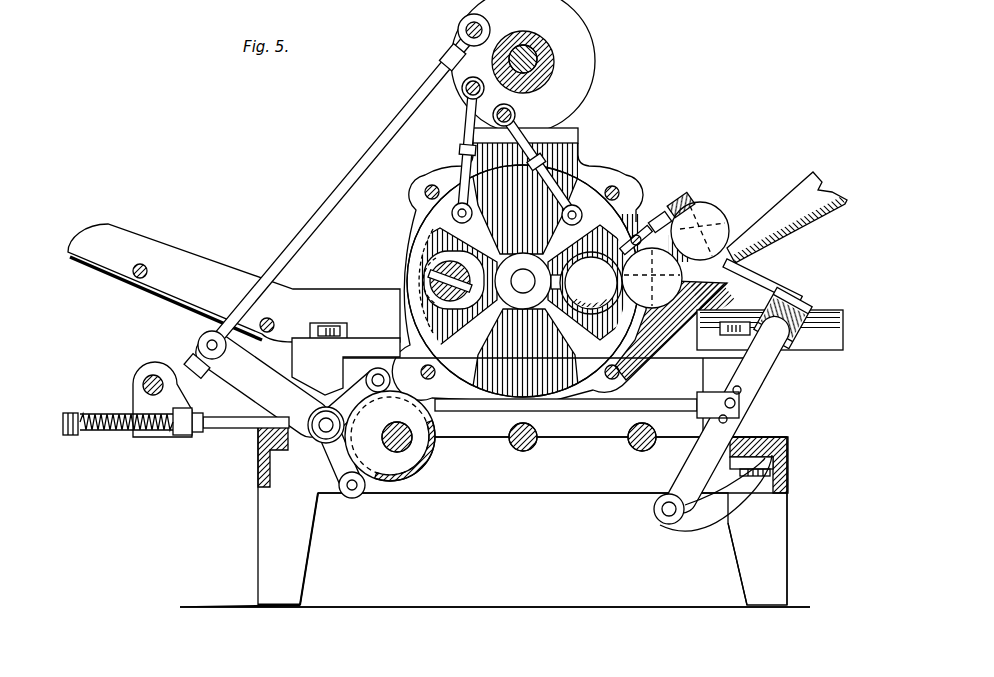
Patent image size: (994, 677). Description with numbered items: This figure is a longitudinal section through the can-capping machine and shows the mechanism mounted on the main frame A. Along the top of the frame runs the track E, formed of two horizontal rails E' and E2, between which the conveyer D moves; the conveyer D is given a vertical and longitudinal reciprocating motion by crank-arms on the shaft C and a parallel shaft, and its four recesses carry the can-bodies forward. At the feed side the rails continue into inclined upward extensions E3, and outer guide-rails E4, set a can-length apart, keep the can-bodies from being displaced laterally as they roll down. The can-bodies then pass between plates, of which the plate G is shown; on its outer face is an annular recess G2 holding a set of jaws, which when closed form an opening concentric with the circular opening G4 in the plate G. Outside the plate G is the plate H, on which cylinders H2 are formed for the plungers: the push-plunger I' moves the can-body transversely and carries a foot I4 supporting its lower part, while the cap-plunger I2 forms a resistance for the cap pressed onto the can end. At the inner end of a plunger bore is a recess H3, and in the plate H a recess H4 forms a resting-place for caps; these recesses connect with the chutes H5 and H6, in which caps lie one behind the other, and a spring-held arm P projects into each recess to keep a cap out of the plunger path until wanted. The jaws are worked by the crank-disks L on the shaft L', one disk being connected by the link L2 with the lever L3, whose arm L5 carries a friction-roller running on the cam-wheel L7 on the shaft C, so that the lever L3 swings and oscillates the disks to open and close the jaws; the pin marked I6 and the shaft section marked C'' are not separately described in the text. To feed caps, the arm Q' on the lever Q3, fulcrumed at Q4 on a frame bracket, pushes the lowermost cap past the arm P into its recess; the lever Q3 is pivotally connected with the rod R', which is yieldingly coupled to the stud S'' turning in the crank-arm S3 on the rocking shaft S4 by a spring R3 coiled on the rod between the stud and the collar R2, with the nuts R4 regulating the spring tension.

The crank-disks L is at (529, 66).
The shaft L' is at (523, 53).
The link L2 is at (364, 157).
The lever L3 is at (263, 384).
The arm L5 is at (333, 464).
The cam-wheel L7 is at (395, 478).
The plate H is at (541, 282).
The cylinders H2 is at (642, 230).
The recess H3 is at (589, 353).
The recess H4 is at (585, 282).
The chute H5 is at (467, 127).
The chute H6 is at (787, 217).
The plate G is at (586, 167).
The annular recesses G2 is at (492, 186).
The circular opening G4 is at (586, 283).
The can-body push-plunger I' is at (419, 280).
The cap-plunger I2 is at (652, 278).
The foot I4 is at (591, 297).
The pin I6 is at (357, 385).
The arm P is at (674, 194).
The passageway or track E is at (817, 293).
The rail E' is at (770, 346).
The rail E2 is at (718, 208).
The upward extensions E3 is at (184, 314).
The side rails E4 is at (193, 263).
The arm Q' is at (767, 304).
The lever Q3 is at (727, 421).
The fulcrum Q4 is at (665, 519).
The rod R' is at (566, 394).
The collar R2 is at (202, 432).
The spring R3 is at (121, 433).
The nuts R4 is at (77, 437).
The block S'' is at (182, 437).
The crank-arm S3 is at (186, 406).
The shaft S4 is at (143, 385).
The main frame A is at (495, 517).
The shaft C is at (400, 436).
The shaft C'' is at (633, 446).
The conveyer D is at (532, 444).